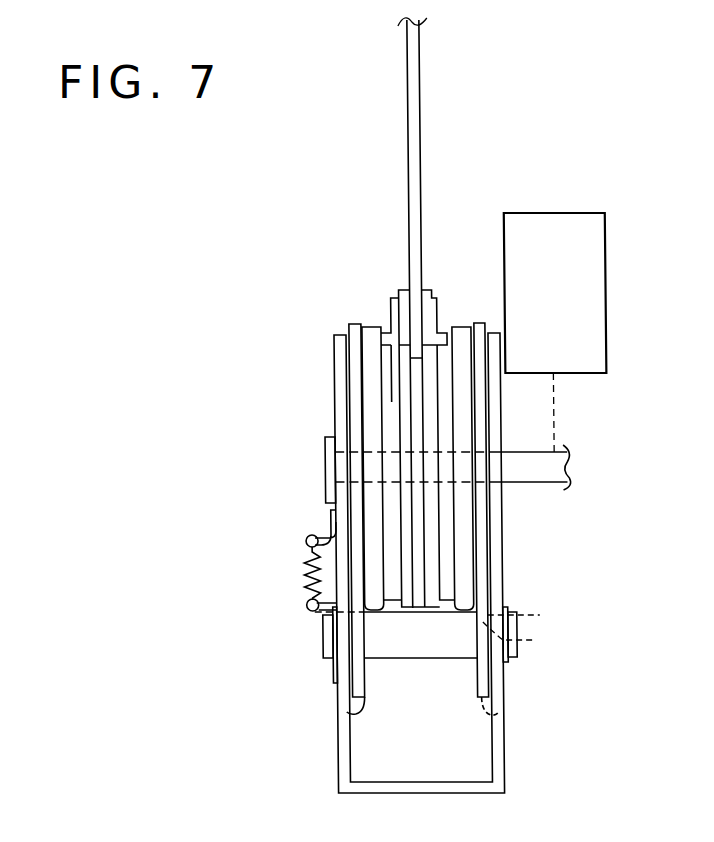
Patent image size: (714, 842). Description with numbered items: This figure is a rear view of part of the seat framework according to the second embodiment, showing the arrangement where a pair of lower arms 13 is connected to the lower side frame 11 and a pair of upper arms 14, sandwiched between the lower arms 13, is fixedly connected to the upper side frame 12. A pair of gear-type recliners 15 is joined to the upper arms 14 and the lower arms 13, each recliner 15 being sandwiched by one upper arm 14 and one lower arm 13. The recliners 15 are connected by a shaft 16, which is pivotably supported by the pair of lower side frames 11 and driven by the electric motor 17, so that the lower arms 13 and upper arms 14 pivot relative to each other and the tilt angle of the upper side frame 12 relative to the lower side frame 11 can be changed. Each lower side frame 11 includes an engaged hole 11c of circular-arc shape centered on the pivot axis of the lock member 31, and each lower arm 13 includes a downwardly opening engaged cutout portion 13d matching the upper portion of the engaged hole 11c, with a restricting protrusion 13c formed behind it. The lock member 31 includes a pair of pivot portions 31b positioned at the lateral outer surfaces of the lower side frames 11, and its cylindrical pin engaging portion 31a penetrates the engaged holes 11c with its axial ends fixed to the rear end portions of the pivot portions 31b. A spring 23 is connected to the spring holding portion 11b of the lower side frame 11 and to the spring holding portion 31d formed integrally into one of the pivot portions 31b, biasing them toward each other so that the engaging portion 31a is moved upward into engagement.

The lower side frame 11 is at (336, 361).
The spring holding portion 11b is at (313, 538).
The engaged hole 11c is at (537, 616).
The upper side frame 12 is at (413, 103).
The lower arm 13 is at (351, 389).
The restricting protrusion 13c is at (345, 712).
The engaged cutout portion 13d is at (535, 639).
The upper arm 14 is at (433, 389).
The recliner 15 is at (370, 327).
The shaft 16 is at (548, 482).
The electric motor 17 is at (553, 213).
The spring 23 is at (309, 566).
The lock member 31 is at (443, 658).
The engaging portion 31a is at (400, 648).
The pivot portion 31b is at (335, 672).
The spring holding portion 31d is at (312, 605).